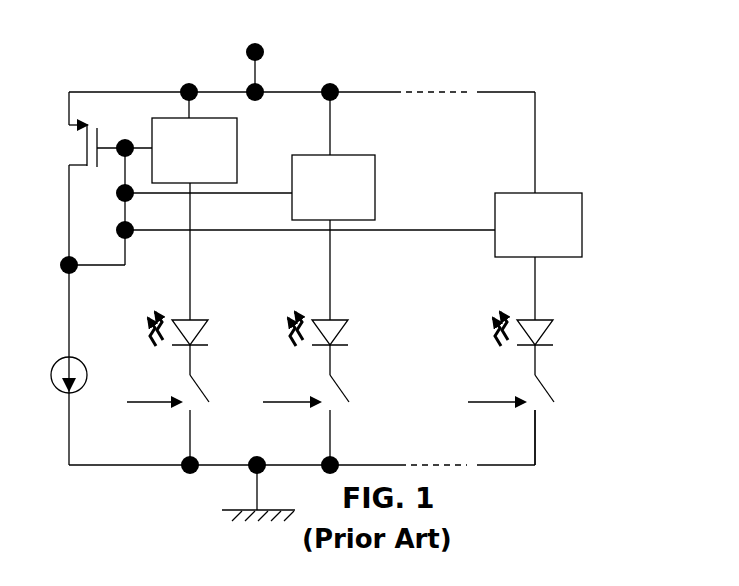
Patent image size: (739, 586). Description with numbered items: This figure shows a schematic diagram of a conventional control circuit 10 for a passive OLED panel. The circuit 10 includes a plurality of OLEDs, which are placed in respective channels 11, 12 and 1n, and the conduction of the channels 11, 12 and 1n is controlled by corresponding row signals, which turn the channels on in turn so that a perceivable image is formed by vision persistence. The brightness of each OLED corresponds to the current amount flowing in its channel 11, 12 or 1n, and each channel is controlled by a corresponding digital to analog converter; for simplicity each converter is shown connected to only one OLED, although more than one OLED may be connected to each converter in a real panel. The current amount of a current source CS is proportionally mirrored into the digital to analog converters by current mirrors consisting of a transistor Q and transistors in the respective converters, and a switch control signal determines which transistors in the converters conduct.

The circuit 10 is at (569, 59).
The channel 11 is at (191, 265).
The channel 12 is at (331, 273).
The channel 1n is at (537, 298).